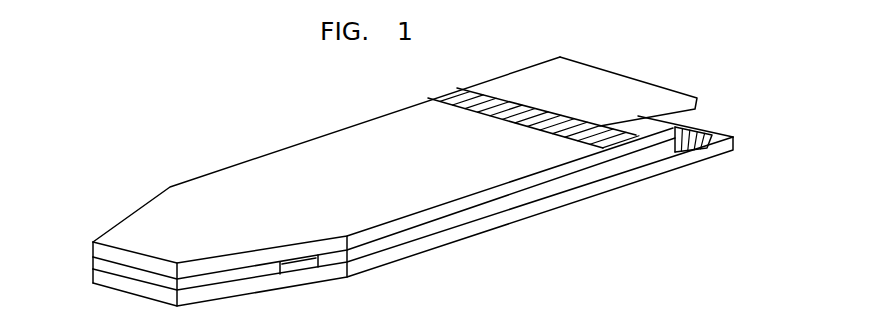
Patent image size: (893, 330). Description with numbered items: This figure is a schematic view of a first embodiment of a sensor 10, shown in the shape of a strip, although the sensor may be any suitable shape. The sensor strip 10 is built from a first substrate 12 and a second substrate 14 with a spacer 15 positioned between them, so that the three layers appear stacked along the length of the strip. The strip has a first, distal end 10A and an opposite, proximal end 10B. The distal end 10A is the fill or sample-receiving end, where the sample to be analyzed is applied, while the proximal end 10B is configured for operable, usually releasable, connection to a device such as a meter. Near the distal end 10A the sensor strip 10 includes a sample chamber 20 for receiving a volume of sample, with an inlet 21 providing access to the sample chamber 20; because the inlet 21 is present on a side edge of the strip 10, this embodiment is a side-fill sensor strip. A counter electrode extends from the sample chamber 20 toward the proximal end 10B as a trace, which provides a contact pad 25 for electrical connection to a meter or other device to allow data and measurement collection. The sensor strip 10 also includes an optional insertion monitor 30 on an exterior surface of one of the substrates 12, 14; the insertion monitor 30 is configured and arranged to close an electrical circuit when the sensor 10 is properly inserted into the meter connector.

The sensor strip 10 is at (242, 108).
The distal end 10A is at (108, 254).
The proximal end 10B is at (622, 76).
The first substrate 12 is at (190, 190).
The second substrate 14 is at (128, 288).
The spacer 15 is at (113, 269).
The sample chamber 20 is at (302, 269).
The inlet 21 is at (287, 270).
The contact pad 25 is at (700, 133).
The insertion monitor 30 is at (465, 98).